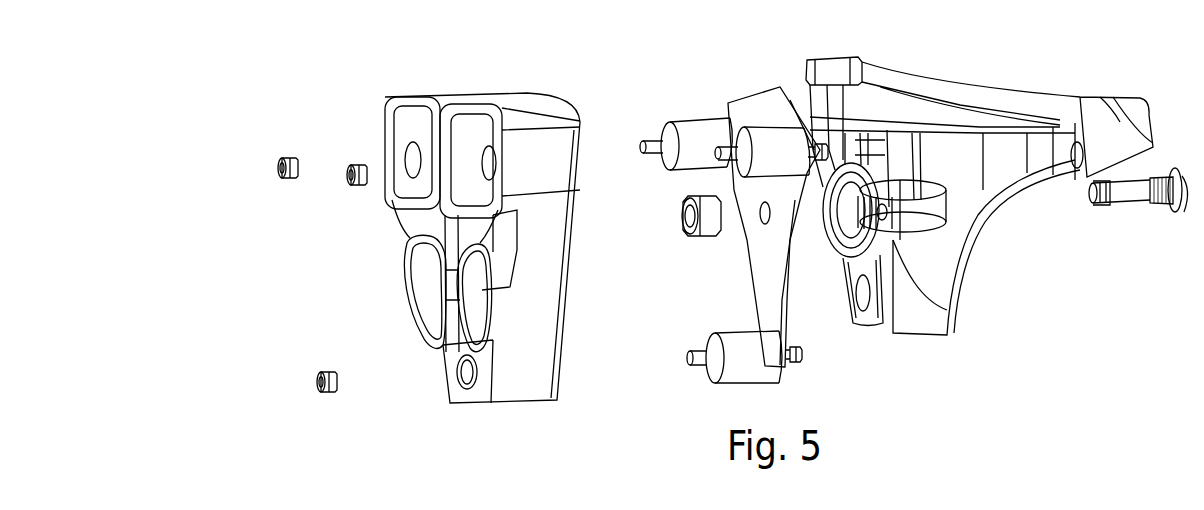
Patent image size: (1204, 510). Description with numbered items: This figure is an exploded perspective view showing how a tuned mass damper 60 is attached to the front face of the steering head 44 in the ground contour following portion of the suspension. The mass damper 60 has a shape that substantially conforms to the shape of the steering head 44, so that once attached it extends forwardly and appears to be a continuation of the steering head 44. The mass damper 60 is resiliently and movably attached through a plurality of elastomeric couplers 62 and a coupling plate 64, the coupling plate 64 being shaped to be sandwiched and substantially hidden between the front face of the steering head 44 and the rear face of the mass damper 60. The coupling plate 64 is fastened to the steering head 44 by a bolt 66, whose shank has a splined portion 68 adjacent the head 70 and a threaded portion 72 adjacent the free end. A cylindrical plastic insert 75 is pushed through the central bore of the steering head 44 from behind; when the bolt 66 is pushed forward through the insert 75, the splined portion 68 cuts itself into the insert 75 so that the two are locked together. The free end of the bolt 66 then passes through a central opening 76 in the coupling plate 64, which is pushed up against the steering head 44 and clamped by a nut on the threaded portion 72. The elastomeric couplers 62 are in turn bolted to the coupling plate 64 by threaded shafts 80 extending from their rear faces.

The steering head 44 is at (970, 130).
The mass damper 60 is at (521, 97).
The elastomeric couplers 62 is at (693, 128).
The coupling plate 64 is at (767, 270).
The bolt 66 is at (1128, 212).
The splined portion 68 is at (1157, 178).
The head 70 is at (1180, 200).
The threaded portion 72 is at (1108, 204).
The cylindrical plastic insert 75 is at (852, 190).
The central opening 76 is at (758, 236).
The threaded shafts 80 is at (821, 150).